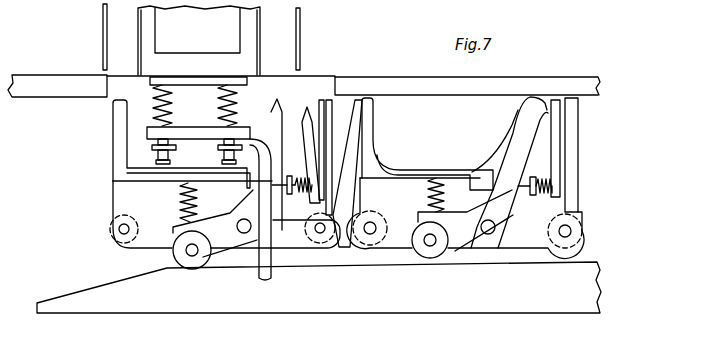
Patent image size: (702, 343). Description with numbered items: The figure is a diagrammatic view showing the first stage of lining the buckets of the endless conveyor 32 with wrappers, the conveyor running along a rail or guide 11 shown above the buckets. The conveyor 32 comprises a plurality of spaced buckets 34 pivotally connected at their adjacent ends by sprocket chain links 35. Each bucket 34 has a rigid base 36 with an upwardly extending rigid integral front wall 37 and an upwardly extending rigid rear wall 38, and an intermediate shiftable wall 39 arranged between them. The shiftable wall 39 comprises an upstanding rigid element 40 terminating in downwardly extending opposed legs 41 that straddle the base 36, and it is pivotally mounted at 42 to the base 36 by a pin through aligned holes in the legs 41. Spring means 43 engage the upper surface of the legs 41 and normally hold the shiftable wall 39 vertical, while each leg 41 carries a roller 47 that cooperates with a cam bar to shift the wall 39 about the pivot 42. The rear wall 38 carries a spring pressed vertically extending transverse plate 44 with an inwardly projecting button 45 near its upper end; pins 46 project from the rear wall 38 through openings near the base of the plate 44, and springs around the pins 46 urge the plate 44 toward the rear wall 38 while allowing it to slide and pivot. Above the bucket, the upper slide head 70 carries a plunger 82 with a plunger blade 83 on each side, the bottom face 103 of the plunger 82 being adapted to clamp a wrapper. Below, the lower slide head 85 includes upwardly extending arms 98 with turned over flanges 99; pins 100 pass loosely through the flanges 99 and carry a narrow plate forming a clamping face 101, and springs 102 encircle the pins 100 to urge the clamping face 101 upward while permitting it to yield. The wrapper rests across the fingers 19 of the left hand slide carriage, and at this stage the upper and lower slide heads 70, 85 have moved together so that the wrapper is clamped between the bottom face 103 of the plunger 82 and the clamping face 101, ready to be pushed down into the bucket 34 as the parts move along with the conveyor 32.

The guide rail 11 is at (397, 80).
The fingers 19 is at (37, 78).
The endless conveyor 32 is at (112, 179).
The bucket 34 is at (112, 151).
The sprocket chain links 35 is at (345, 243).
The rigid base 36 is at (113, 198).
The front wall 37 is at (113, 120).
The rear wall 38 is at (330, 100).
The shiftable wall 39 is at (282, 115).
The upstanding rigid element 40 is at (280, 110).
The legs 41 is at (232, 247).
The pivot 42 is at (244, 233).
The spring means 43 is at (180, 197).
The transverse plate 44 is at (304, 230).
The button 45 is at (308, 118).
The pins 46 is at (310, 202).
The roller 47 is at (185, 266).
The upper slide head 70 is at (309, 36).
The plunger 82 is at (199, 40).
The plunger blades 83 is at (103, 10).
The lower slide head 85 is at (275, 254).
The arms 98 is at (266, 279).
The flanges 99 is at (198, 140).
The pins 100 is at (198, 157).
The clamping face 101 is at (196, 30).
The springs 102 is at (218, 108).
The bottom face 103 is at (200, 75).